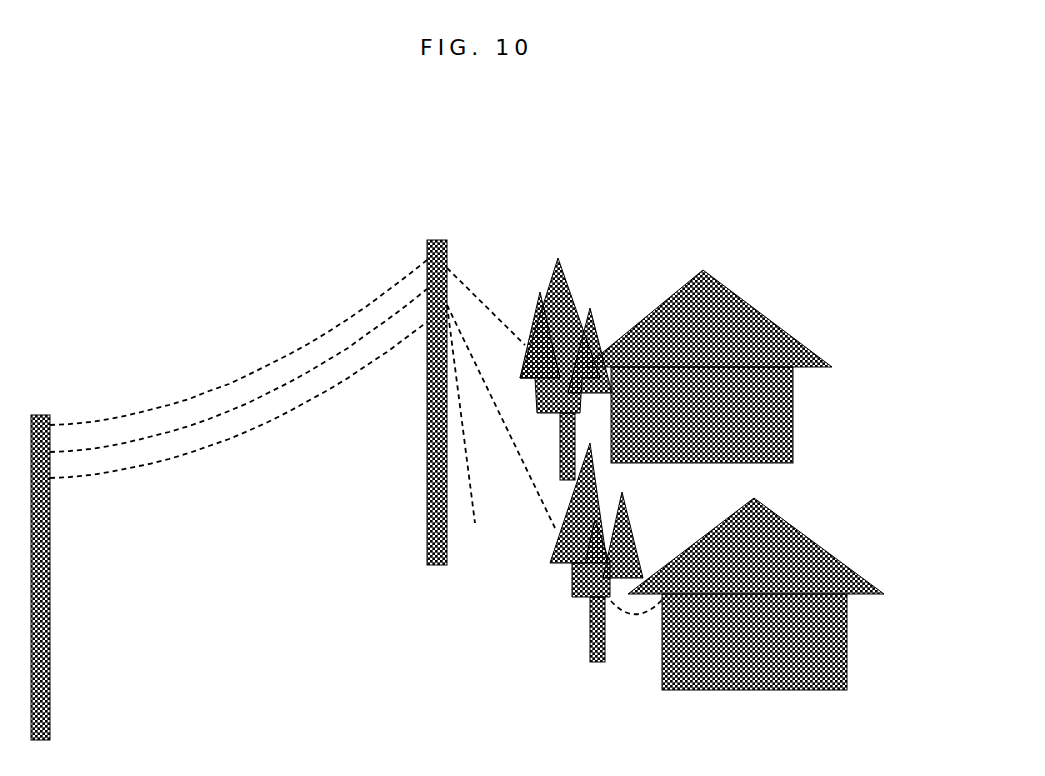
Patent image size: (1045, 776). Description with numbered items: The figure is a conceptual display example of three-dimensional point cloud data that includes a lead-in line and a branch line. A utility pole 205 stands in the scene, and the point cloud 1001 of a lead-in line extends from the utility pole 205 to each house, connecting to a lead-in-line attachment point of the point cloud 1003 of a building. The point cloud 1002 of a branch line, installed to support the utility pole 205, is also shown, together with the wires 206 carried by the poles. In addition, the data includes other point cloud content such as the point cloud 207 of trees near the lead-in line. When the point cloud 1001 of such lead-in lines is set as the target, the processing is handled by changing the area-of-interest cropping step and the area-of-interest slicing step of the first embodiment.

The utility pole 205 is at (44, 414).
The power line 206 is at (280, 357).
The point cloud of trees 207 is at (573, 583).
The point cloud of a lead-in line 1001 is at (455, 325).
The point cloud of a branch line 1002 is at (463, 445).
The point cloud of a building 1003 is at (797, 404).